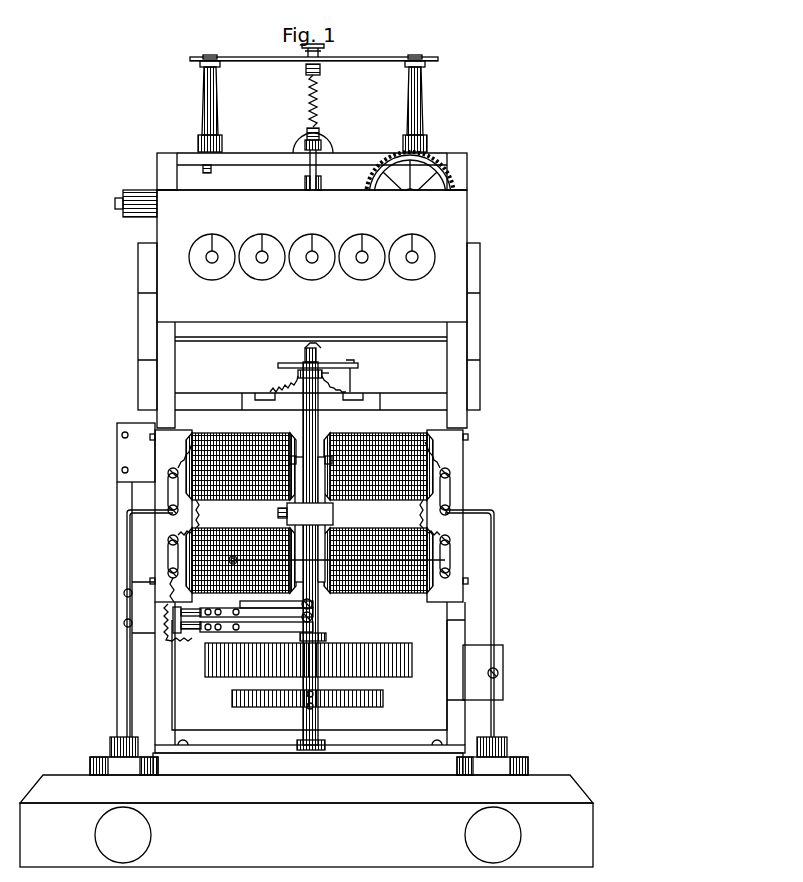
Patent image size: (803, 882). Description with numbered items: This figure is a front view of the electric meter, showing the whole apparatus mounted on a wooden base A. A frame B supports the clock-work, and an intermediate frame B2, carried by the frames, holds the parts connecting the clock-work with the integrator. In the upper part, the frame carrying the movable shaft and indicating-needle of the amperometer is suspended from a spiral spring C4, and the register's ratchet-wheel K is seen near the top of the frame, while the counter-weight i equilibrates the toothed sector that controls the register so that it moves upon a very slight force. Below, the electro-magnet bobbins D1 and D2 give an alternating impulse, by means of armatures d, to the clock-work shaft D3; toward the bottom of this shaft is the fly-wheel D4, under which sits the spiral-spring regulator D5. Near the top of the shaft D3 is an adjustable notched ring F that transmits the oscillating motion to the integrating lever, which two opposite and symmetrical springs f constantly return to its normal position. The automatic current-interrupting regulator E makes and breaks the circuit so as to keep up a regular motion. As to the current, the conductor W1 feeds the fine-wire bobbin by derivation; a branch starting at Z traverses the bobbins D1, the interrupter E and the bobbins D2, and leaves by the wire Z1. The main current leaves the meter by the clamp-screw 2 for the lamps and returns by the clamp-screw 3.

The wooden base A is at (306, 821).
The frame B is at (166, 427).
The intermediate frame B2 is at (480, 323).
The spiral spring C4 is at (318, 101).
The ratchet-wheel K is at (453, 185).
The counter-weight i is at (137, 193).
The electro-magnet bobbins D1 is at (309, 513).
The electro-magnet bobbins D2 is at (309, 513).
The shaft of the clock-work D3 is at (318, 544).
The fly-wheel D4 is at (308, 660).
The spiral-spring regulator D5 is at (383, 701).
The armatures d is at (310, 449).
The automatic current-interrupting regulator E is at (206, 642).
The adjustable ring F is at (298, 374).
The springs f is at (304, 383).
The conductor W1 is at (117, 506).
The derivation start point Z is at (125, 543).
The wire Z1 is at (494, 607).
The clamp-screw 2 is at (92, 758).
The clamp-screw 3 is at (508, 757).